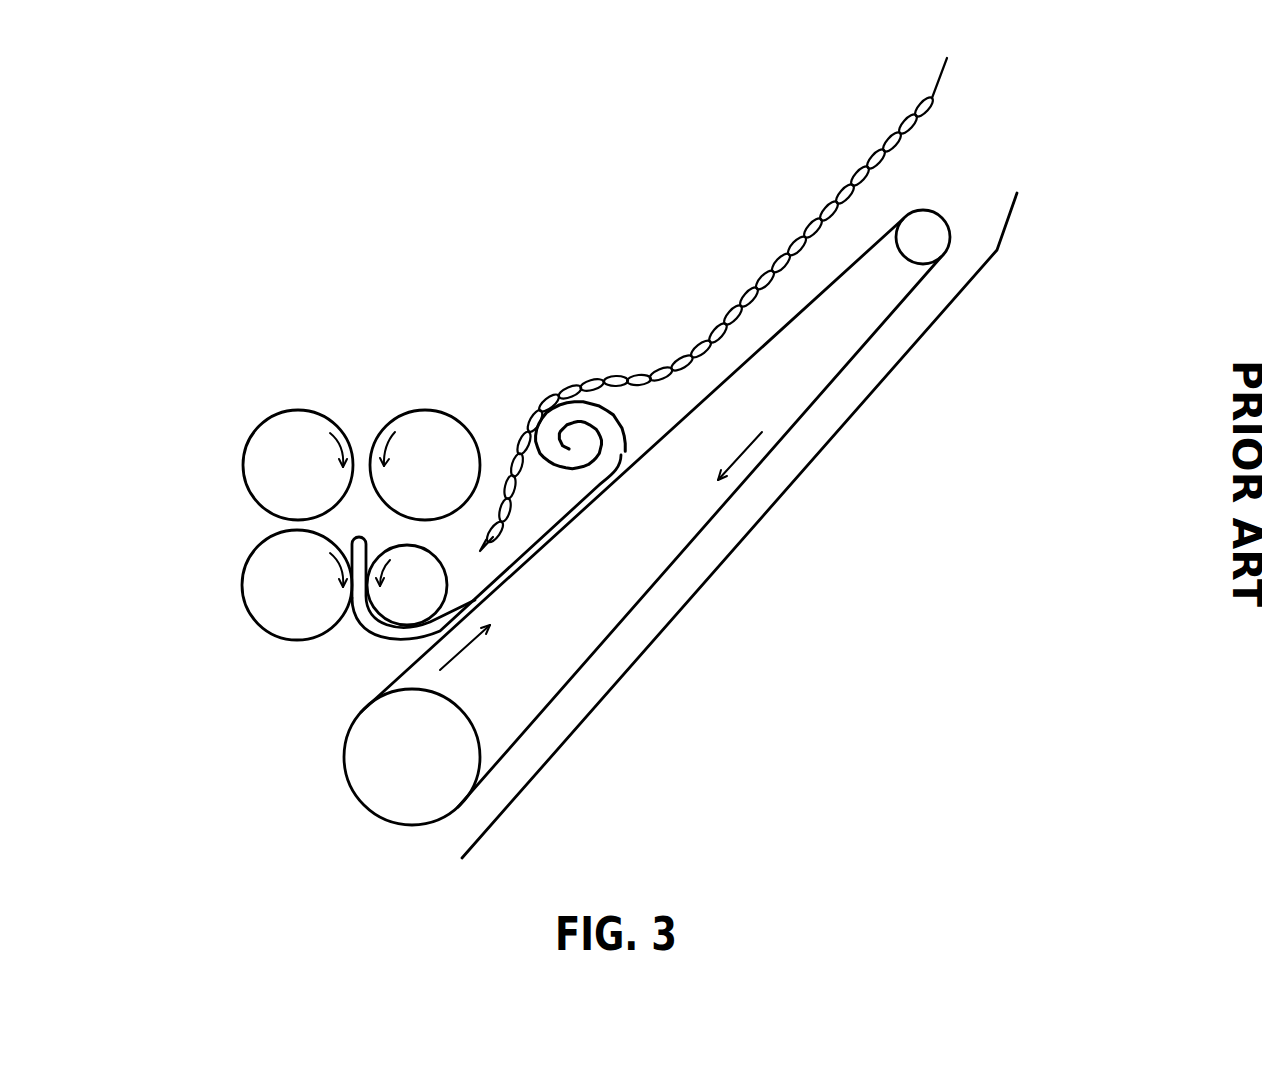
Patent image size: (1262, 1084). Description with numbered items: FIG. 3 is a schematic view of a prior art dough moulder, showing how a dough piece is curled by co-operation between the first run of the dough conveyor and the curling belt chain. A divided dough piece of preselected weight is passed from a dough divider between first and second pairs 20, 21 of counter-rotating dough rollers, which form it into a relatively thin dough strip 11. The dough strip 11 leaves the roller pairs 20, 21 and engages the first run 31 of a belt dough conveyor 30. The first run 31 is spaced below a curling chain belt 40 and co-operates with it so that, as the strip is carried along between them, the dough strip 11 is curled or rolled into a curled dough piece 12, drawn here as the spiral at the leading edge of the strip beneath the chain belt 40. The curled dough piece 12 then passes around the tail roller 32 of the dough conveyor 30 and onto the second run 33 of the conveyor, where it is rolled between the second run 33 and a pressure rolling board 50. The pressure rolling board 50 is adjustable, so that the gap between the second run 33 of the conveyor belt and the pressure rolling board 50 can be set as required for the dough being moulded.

The dough strip 11 is at (367, 633).
The curled dough piece 12 is at (577, 415).
The first pair of counter-rotating dough rollers 20 is at (230, 452).
The second pair of counter-rotating dough rollers 21 is at (230, 582).
The belt dough conveyor 30 is at (607, 479).
The first run 31 is at (390, 680).
The tail roller 32 is at (922, 242).
The second run 33 is at (825, 402).
The curling chain belt 40 is at (718, 323).
The pressure rolling board 50 is at (985, 267).